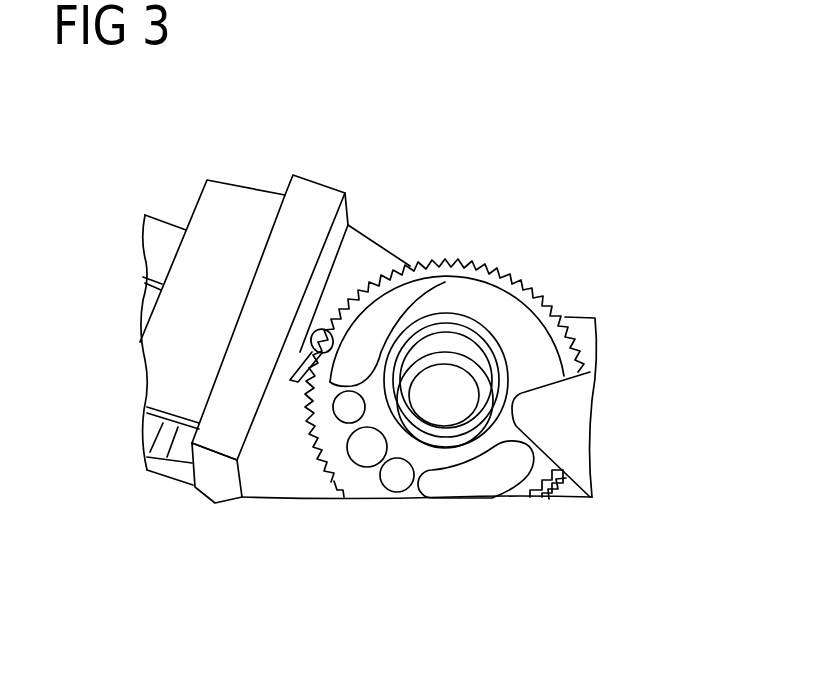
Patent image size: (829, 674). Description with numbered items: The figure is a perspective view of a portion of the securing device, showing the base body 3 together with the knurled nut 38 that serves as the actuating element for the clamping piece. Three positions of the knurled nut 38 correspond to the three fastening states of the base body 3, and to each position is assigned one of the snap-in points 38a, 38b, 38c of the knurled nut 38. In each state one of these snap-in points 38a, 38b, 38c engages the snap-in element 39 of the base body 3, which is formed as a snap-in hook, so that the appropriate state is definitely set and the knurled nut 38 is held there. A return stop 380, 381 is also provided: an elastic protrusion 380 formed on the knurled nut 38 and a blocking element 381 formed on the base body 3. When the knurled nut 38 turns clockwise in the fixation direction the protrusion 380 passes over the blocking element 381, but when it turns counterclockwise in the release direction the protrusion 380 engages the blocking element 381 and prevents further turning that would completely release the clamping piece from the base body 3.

The base body 3 is at (243, 173).
The knurled nut 38 is at (547, 312).
The protrusion 380 is at (348, 224).
The blocking element 381 is at (300, 345).
The snap-in point 38a is at (350, 410).
The snap-in point 38b is at (403, 477).
The snap-in point 38c is at (492, 447).
The snap-in element 39 is at (527, 410).